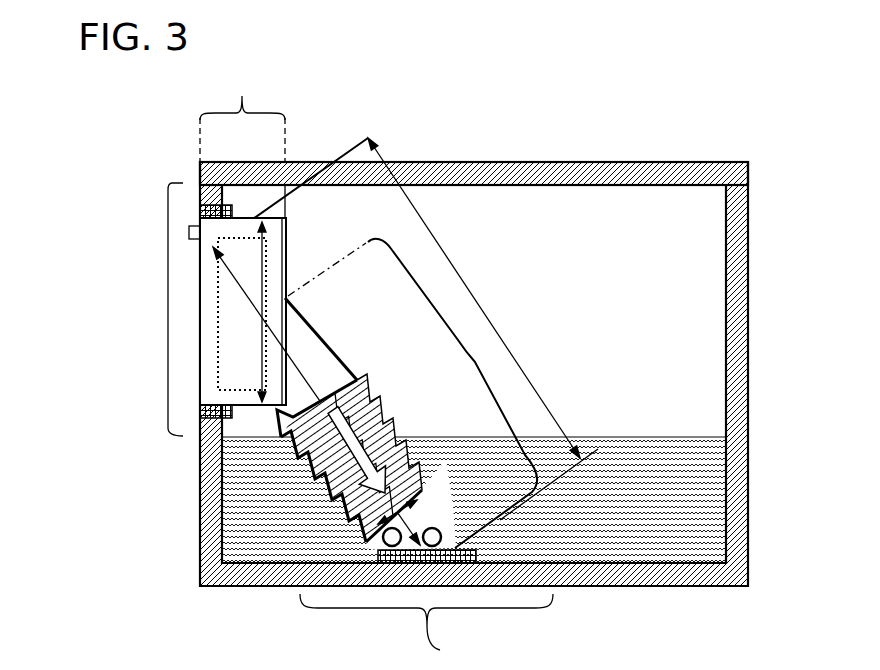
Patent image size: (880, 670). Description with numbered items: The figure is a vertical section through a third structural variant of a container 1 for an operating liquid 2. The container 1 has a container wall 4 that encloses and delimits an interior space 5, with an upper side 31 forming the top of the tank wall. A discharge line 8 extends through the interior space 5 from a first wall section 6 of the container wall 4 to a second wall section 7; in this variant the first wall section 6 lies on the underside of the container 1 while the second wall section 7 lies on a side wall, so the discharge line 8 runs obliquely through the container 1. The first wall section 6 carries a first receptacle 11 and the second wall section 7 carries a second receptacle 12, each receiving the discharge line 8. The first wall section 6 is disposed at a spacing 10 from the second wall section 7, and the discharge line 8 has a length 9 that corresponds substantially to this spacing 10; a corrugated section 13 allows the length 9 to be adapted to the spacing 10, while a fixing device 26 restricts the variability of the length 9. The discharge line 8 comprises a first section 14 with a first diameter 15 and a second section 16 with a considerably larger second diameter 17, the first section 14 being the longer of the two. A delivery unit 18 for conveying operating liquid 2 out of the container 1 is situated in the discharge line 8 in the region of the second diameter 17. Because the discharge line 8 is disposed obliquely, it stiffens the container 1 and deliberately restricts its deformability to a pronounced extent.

The container 1 is at (175, 148).
The operating liquid 2 is at (650, 450).
The container wall 4 is at (200, 510).
The interior space 5 is at (588, 226).
The first wall section 6 is at (426, 632).
The second wall section 7 is at (168, 305).
The discharge line 8 is at (313, 324).
The length 9 is at (367, 435).
The spacing 10 is at (478, 312).
The first receptacle 11 is at (477, 562).
The second receptacle 12 is at (198, 410).
The corrugated section 13 is at (390, 403).
The first section 14 is at (493, 338).
The first diameter 15 is at (425, 513).
The second section 16 is at (242, 111).
The second diameter 17 is at (267, 255).
The delivery unit 18 is at (217, 357).
The fixing device 26 is at (308, 490).
The upper side 31 is at (697, 162).